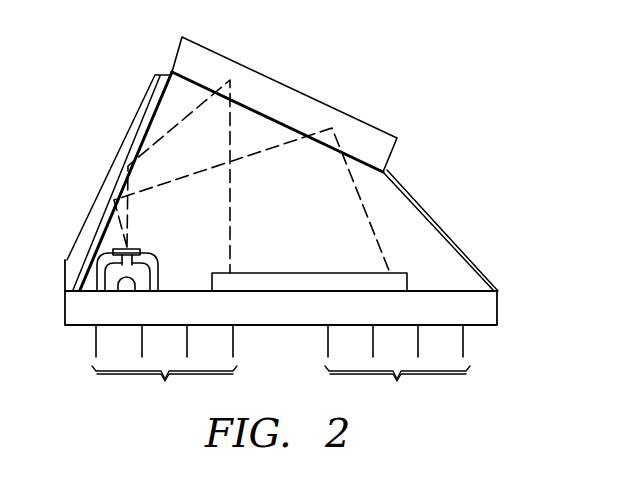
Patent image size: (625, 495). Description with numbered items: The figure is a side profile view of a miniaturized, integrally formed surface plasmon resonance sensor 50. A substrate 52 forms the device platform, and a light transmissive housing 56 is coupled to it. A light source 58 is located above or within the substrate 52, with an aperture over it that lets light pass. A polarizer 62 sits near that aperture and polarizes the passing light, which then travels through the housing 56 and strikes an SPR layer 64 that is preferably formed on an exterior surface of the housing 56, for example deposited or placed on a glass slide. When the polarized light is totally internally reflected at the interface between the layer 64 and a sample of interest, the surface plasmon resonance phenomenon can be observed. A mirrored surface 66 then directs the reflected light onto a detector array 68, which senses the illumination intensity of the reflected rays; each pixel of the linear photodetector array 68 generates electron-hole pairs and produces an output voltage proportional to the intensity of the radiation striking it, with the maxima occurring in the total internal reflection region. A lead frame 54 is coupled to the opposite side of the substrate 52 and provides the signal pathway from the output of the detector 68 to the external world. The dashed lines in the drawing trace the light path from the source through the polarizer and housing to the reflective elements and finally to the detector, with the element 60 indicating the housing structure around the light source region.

The surface plasmon resonance sensor 50 is at (462, 74).
The substrate 52 is at (498, 310).
The lead frame 54 is at (281, 368).
The light transmissive housing 56 is at (432, 238).
The light source 58 is at (124, 292).
The emitter housing 60 is at (148, 257).
The polarizer 62 is at (139, 249).
The SPR layer 64 is at (143, 118).
The mirrored surface 66 is at (315, 99).
The detector array 68 is at (323, 273).